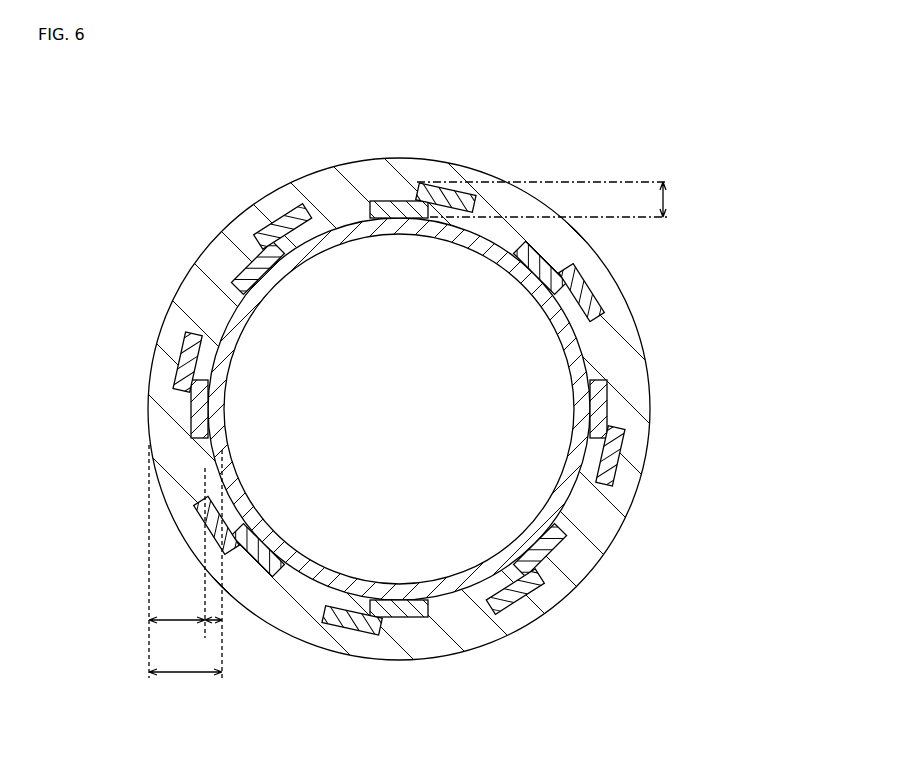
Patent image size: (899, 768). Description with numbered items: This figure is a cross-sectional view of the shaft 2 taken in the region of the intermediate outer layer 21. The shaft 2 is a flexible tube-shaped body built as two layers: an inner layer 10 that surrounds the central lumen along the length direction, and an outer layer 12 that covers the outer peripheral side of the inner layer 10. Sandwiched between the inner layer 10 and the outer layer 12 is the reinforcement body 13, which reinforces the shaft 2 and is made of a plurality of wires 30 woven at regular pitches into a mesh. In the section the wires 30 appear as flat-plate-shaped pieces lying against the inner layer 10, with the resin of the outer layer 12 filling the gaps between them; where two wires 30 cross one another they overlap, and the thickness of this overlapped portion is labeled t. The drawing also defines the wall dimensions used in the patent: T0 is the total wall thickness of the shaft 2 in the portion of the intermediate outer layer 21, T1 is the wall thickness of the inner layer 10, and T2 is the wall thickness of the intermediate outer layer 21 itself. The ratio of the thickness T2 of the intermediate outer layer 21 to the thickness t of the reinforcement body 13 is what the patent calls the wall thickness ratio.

The shaft 2 is at (607, 268).
The intermediate outer layer 21 is at (647, 372).
The inner layer 10 is at (633, 500).
The outer layer 12 is at (231, 222).
The reinforcement body 13 is at (380, 198).
The wires 30 is at (405, 199).
The thickness of the reinforcement body t is at (553, 200).
The wall thickness of the shaft T0 is at (185, 687).
The wall thickness of the inner layer T1 is at (212, 623).
The wall thickness of the intermediate outer layer T2 is at (177, 561).